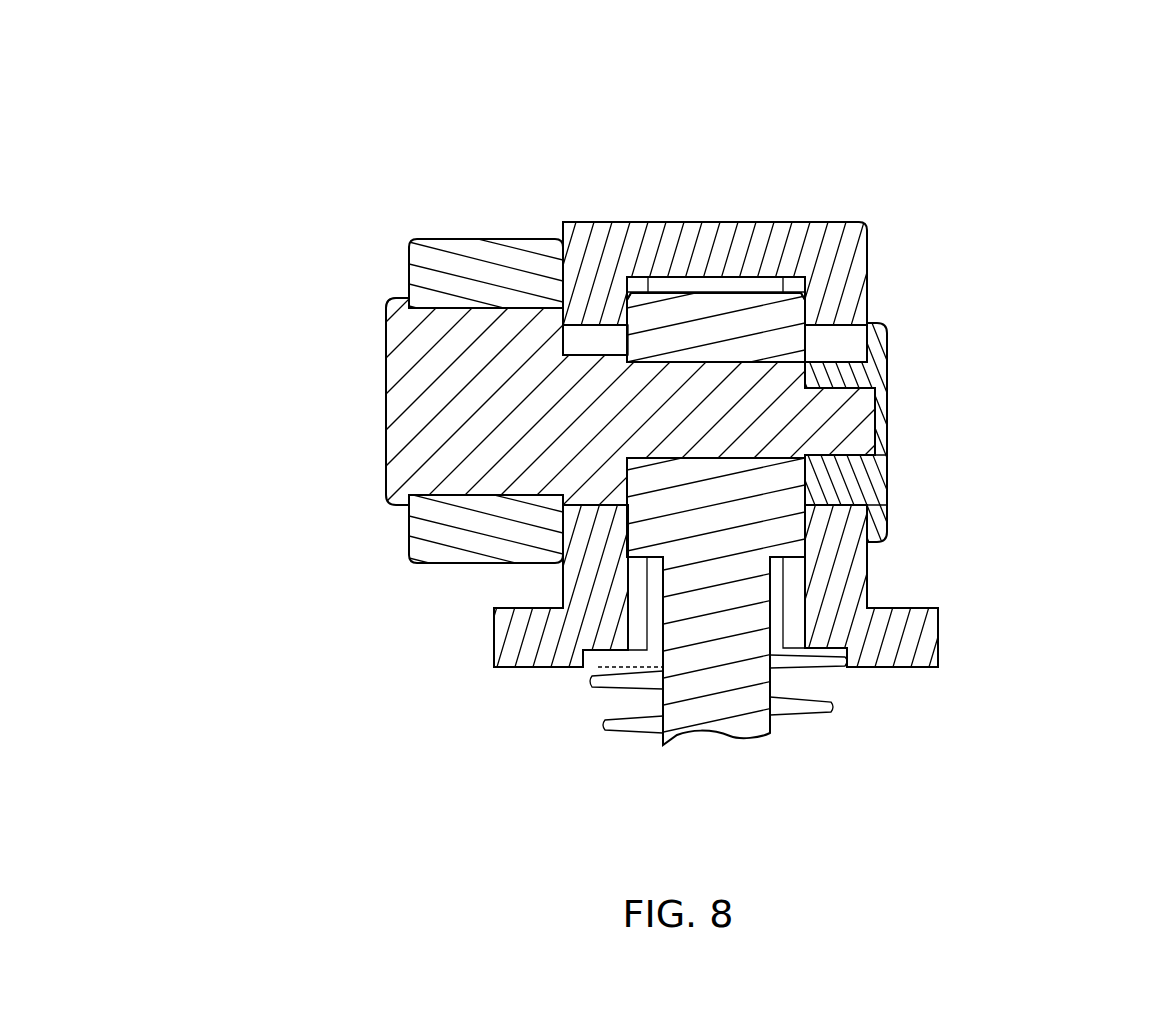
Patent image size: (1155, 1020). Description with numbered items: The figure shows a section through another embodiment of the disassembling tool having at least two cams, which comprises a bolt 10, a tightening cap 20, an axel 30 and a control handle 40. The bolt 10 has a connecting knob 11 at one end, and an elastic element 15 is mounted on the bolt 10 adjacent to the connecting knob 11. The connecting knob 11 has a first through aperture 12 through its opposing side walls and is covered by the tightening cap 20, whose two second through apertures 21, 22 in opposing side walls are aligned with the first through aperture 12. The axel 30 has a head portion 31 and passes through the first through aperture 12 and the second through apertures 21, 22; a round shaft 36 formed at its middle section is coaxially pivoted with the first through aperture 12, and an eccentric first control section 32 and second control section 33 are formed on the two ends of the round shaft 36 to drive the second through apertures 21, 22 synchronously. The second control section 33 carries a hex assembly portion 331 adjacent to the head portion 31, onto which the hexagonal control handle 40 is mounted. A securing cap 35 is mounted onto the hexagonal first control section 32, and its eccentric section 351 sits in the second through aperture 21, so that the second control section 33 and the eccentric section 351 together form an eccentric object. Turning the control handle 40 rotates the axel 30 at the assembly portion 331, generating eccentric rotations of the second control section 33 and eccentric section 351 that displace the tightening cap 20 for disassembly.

The bolt 10 is at (765, 748).
The connecting knob 11 is at (692, 322).
The first through aperture 12 is at (738, 343).
The round shaft 36 is at (716, 327).
The elastic element 15 is at (833, 707).
The tightening cap 20 is at (782, 210).
The second through aperture 21 is at (823, 342).
The second through aperture 22 is at (597, 340).
The axel 30 is at (372, 398).
The head portion 31 is at (400, 325).
The first control section 32 is at (838, 400).
The second control section 33 is at (593, 488).
The assembly portion 331 is at (465, 498).
The securing cap 35 is at (887, 473).
The eccentric section 351 is at (833, 485).
The control handle 40 is at (460, 226).